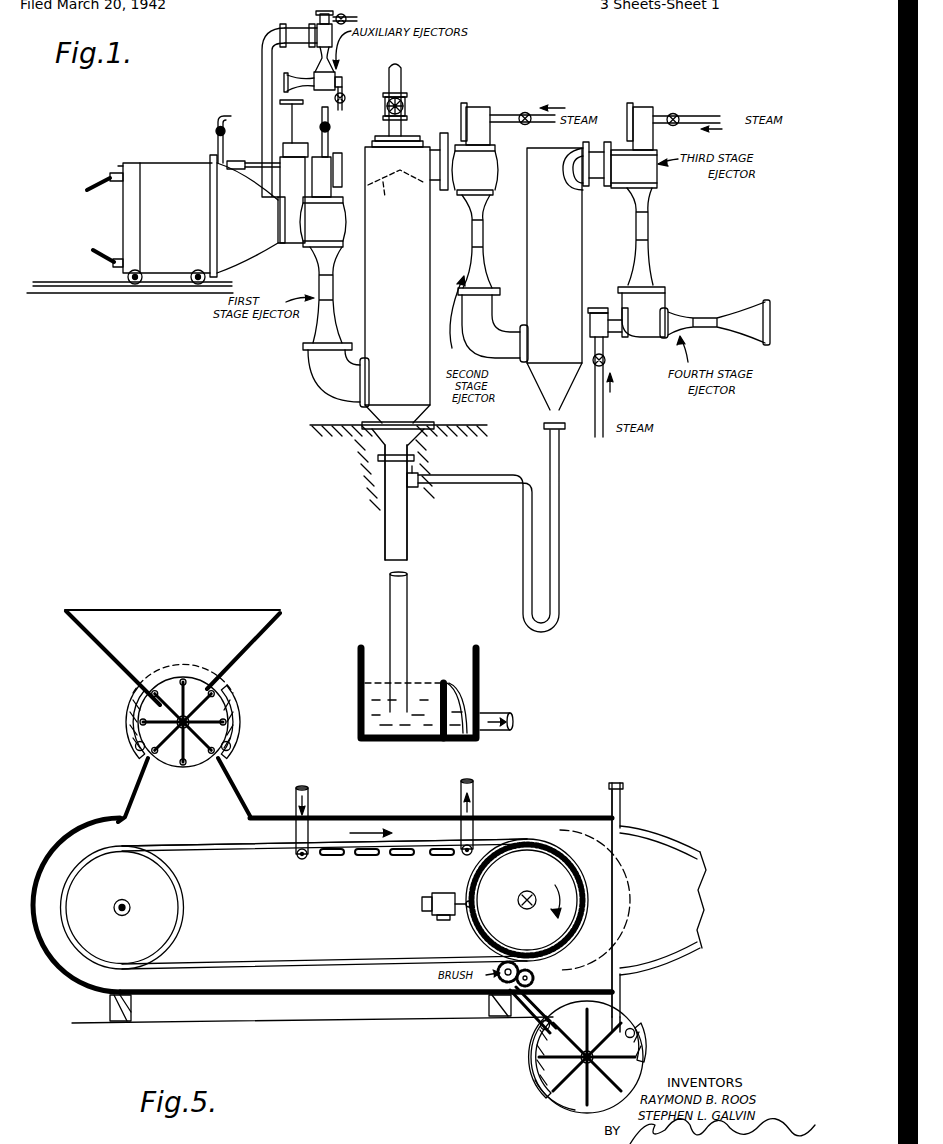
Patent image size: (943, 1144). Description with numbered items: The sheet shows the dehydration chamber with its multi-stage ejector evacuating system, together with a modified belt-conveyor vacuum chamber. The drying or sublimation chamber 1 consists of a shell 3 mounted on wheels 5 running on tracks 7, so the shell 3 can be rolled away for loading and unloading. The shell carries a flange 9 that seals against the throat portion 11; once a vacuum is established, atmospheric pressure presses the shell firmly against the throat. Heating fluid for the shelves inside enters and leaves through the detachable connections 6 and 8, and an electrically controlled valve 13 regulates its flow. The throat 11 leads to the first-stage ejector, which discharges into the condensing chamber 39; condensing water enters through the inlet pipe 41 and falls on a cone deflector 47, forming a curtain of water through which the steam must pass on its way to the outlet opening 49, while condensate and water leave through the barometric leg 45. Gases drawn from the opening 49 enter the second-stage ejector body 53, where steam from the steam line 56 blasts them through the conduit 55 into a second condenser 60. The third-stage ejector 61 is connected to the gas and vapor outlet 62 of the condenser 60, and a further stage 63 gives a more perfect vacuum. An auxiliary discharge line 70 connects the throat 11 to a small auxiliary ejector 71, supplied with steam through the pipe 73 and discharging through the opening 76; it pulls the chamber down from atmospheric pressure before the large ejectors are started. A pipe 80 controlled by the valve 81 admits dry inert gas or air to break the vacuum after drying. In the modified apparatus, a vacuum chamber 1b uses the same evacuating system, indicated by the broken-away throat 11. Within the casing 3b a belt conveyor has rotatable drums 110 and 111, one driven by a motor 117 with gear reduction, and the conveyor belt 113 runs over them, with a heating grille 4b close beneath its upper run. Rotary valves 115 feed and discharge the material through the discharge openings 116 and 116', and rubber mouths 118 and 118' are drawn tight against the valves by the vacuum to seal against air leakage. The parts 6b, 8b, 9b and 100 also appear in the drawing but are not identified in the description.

In FIG. 1, the drying or sublimation chamber 1 is at (130, 152).
In FIG. 1, the shell 3 is at (163, 168).
In FIG. 1, the wheels 5 is at (197, 286).
In FIG. 1, the detachable connection 6 is at (88, 180).
In FIG. 1, the tracks 7 is at (70, 294).
In FIG. 1, the detachable connection 8 is at (90, 250).
In FIG. 1, the flange 9 is at (210, 229).
In FIG. 1, the throat portion 11 is at (240, 236).
In FIG. 5, the throat portion 11 is at (692, 847).
In FIG. 1, the electrically controlled valve 13 is at (118, 168).
In FIG. 1, the condensing chamber 39 is at (398, 353).
In FIG. 1, the inlet pipe 41 is at (401, 77).
In FIG. 1, the barometric leg 45 is at (388, 578).
In FIG. 1, the cone deflector 47 is at (396, 193).
In FIG. 1, the outlet opening 49 is at (431, 147).
In FIG. 1, the second-stage ejector body 53 is at (475, 149).
In FIG. 1, the velocity producing and maintaining conduit 55 is at (480, 240).
In FIG. 1, the steam line 56 is at (507, 114).
In FIG. 1, the condenser 60 is at (562, 258).
In FIG. 1, the third-stage ejector 61 is at (652, 178).
In FIG. 1, the gas and vapor outlet 62 is at (575, 188).
In FIG. 1, the additional stage ejector 63 is at (650, 332).
In FIG. 1, the auxiliary discharge line 70 is at (262, 58).
In FIG. 1, the auxiliary ejector 71 is at (284, 24).
In FIG. 1, the steam pipe 73 is at (358, 20).
In FIG. 1, the discharge opening 76 is at (320, 62).
In FIG. 1, the pipe 80 is at (226, 117).
In FIG. 1, the valve 81 is at (214, 130).
In FIG. 5, the vacuum chamber 1b is at (324, 899).
In FIG. 5, the casing 3b is at (330, 997).
In FIG. 5, the heating grille 4b is at (330, 857).
In FIG. 5, the inlet pipe 6b is at (308, 791).
In FIG. 5, the outlet pipe 8b is at (473, 786).
In FIG. 5, the housing end wall 9b is at (613, 790).
In FIG. 5, the discharge chute 100 is at (549, 1082).
In FIG. 5, the rotatable drum 110 is at (165, 928).
In FIG. 5, the rotatable drum 111 is at (480, 863).
In FIG. 5, the conveyor belt 113 is at (212, 848).
In FIG. 5, the rotary valve 115 is at (204, 703).
In FIG. 5, the discharge opening 116 is at (186, 758).
In FIG. 5, the motor 117 is at (426, 910).
In FIG. 5, the rubber mouth 118 is at (156, 719).
In FIG. 5, the discharge opening 116' is at (623, 1023).
In FIG. 5, the rubber mouth 118' is at (617, 1057).